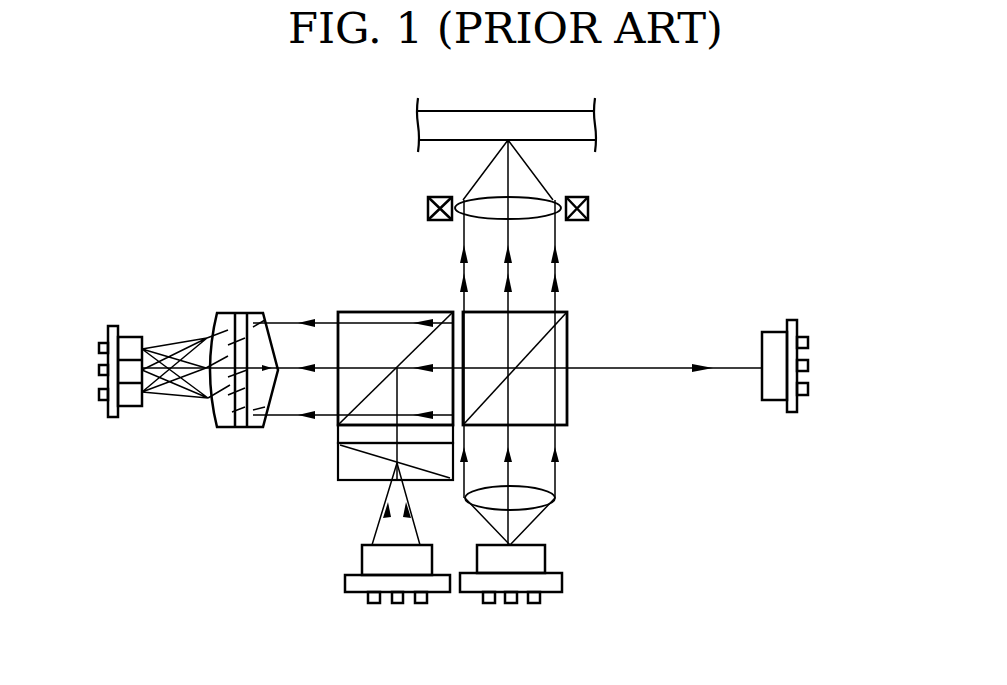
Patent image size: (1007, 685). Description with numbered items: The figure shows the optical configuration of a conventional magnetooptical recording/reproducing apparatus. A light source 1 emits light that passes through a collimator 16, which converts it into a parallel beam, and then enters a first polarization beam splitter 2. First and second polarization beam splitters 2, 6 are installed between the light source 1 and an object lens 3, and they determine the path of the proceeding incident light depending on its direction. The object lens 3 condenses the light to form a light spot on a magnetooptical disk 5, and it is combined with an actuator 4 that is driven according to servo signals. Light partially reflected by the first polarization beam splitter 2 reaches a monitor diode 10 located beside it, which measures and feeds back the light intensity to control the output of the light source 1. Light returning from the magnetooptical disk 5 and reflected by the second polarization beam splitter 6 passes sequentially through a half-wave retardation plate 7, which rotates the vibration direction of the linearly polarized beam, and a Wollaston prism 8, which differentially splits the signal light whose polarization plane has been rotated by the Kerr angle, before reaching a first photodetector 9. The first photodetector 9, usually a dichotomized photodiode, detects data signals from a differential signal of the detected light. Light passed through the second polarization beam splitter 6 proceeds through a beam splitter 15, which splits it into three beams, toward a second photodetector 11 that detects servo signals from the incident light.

The light source 1 is at (533, 557).
The first polarization beam splitter 2 is at (545, 395).
The object lens 3 is at (538, 208).
The actuator 4 is at (428, 208).
The magnetooptical disk 5 is at (582, 123).
The second polarization beam splitter 6 is at (348, 328).
The λ/2 retardation plate 7 is at (340, 440).
The Wollaston prism 8 is at (355, 473).
The first photodetector 9 is at (373, 563).
The monitor diode 10 is at (775, 335).
The second photodetector 11 is at (127, 400).
The beam splitter 15 is at (212, 436).
The collimator 16 is at (545, 497).